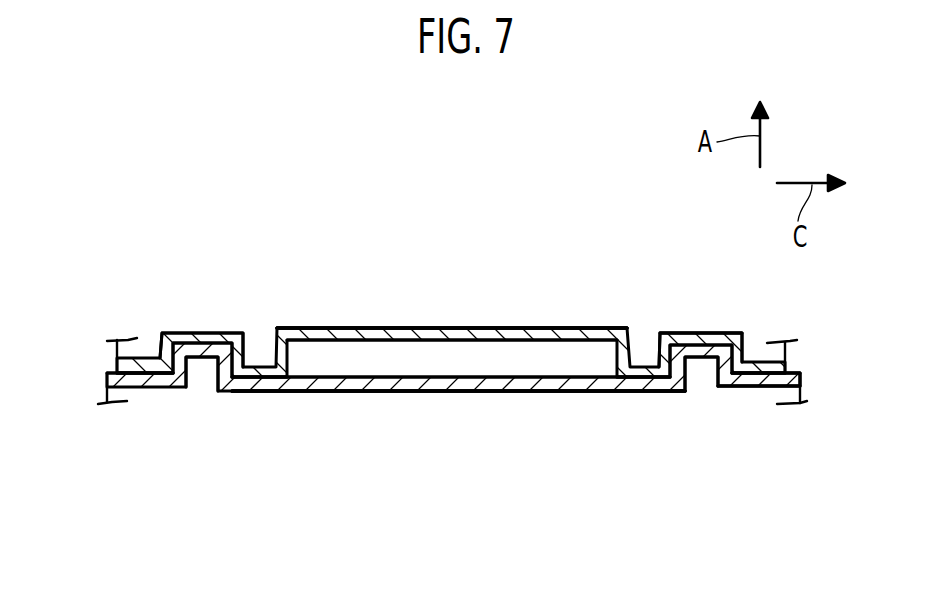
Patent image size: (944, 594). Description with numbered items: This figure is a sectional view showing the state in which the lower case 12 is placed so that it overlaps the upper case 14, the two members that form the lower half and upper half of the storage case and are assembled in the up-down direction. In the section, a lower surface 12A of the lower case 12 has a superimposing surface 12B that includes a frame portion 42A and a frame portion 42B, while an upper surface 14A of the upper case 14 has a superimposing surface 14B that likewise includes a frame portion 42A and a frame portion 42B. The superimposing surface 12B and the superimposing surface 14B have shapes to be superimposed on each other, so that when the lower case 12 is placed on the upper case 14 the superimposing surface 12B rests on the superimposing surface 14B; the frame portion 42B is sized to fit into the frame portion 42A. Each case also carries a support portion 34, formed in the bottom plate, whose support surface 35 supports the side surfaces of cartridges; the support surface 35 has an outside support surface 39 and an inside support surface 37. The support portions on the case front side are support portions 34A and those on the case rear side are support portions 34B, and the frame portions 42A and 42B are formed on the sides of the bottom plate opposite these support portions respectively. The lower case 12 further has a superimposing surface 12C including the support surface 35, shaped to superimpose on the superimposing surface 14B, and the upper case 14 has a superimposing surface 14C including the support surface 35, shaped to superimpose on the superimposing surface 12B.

The lower case 12 is at (104, 357).
The lower surface 12A is at (450, 460).
The superimposing surface 12B is at (167, 375).
The superimposing surface 12C is at (422, 327).
The upper case 14 is at (96, 396).
The upper surface 14A is at (503, 401).
The superimposing surface 14B is at (763, 363).
The superimposing surface 14C is at (377, 392).
The support portion 34 is at (458, 390).
The support portion 34A is at (356, 302).
The support portion 34B is at (418, 413).
The support surface 35 is at (516, 368).
The inside support surface 37 is at (508, 325).
The outside support surface 39 is at (697, 333).
The frame portion 42A is at (197, 333).
The frame portion 42B is at (271, 393).